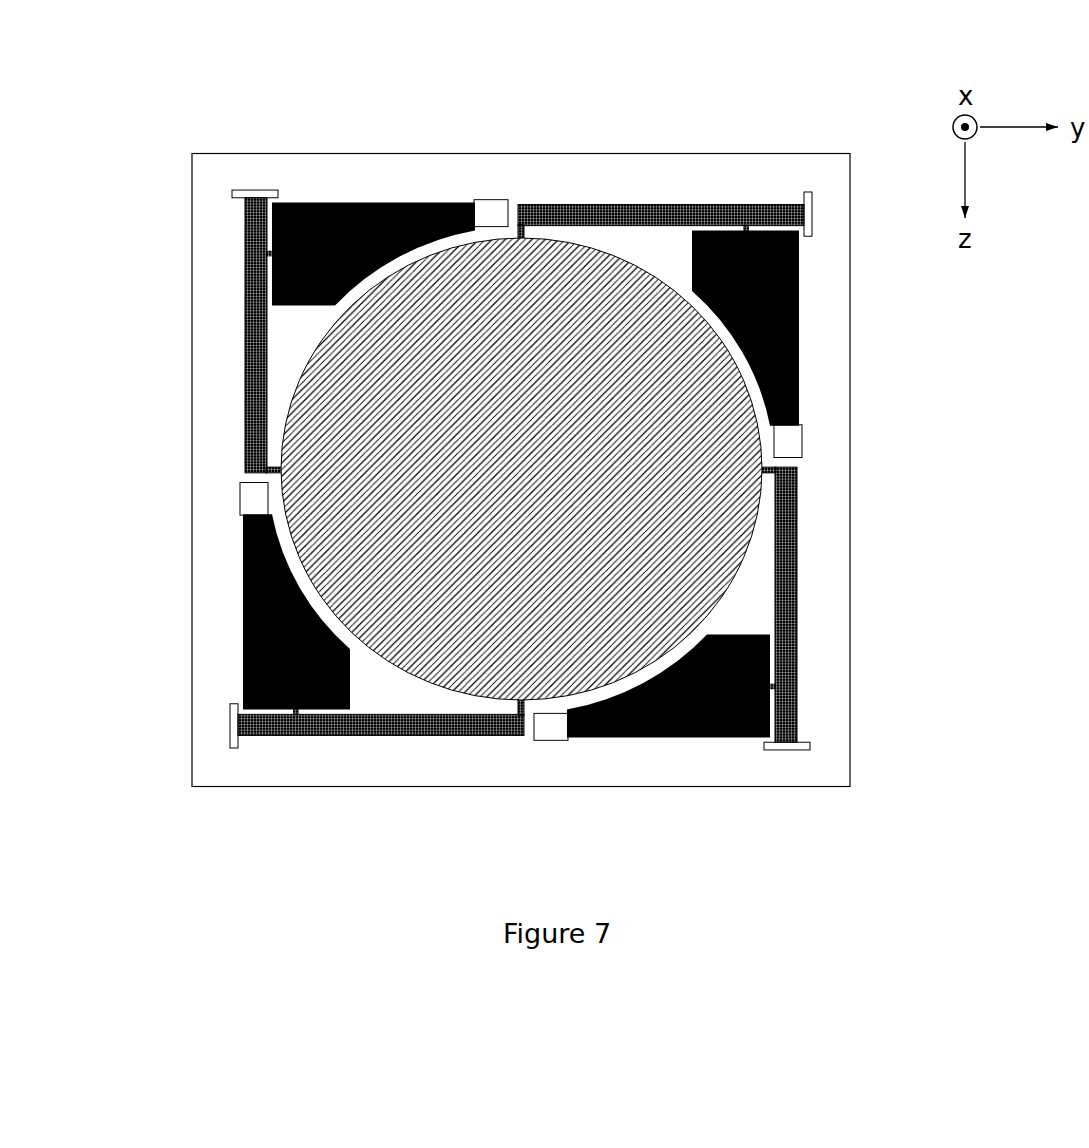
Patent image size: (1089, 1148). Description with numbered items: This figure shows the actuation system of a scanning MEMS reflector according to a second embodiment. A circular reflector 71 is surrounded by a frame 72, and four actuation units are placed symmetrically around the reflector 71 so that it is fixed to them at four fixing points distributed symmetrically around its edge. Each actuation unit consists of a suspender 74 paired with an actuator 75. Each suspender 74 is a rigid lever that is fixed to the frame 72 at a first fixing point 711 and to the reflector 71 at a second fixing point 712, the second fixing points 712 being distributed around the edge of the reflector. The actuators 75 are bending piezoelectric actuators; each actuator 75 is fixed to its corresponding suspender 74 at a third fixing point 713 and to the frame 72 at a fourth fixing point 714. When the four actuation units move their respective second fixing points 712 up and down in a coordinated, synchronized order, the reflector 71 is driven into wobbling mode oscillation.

The reflector 71 is at (632, 418).
The frame 72 is at (830, 550).
The suspender 74 is at (260, 347).
The actuator 75 is at (240, 632).
The first fixing point 711 is at (250, 194).
The second fixing point 712 is at (262, 467).
The third fixing point 713 is at (262, 254).
The fourth fixing point 714 is at (255, 502).